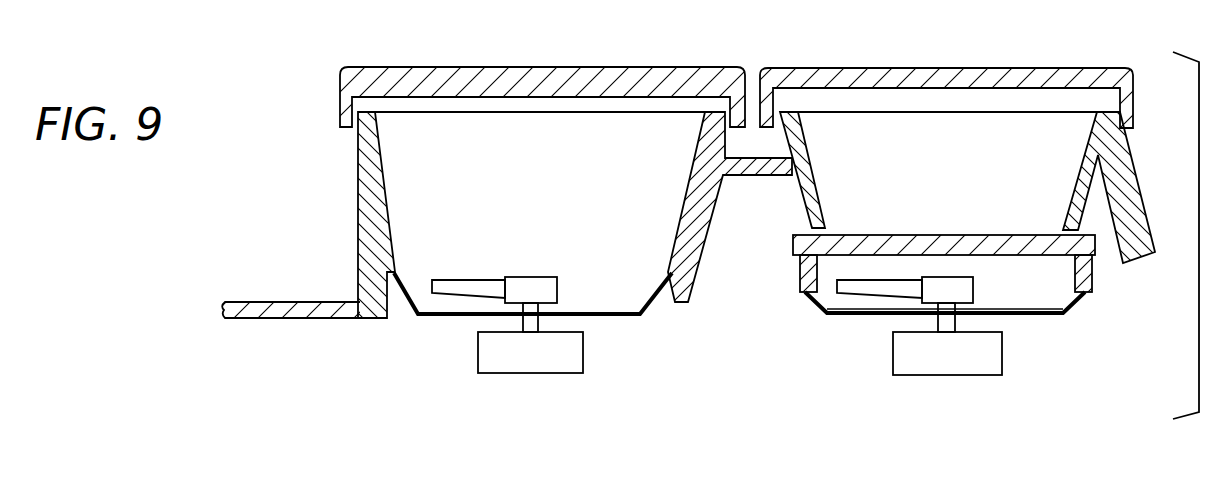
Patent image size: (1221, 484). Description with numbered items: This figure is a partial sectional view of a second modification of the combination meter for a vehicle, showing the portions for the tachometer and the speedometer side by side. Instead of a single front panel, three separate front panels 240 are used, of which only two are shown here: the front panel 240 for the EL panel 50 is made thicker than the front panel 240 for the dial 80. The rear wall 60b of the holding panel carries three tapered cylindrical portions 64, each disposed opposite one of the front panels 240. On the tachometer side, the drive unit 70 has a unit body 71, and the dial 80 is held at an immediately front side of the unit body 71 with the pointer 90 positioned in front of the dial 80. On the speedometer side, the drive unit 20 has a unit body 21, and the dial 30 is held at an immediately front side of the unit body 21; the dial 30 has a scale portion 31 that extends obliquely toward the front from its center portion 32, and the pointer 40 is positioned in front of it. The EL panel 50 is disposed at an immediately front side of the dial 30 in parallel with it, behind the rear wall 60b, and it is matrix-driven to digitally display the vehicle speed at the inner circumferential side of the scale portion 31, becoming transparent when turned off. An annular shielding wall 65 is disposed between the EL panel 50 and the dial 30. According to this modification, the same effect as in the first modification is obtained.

The front panel 240 is at (565, 67).
The tapered cylindrical portion 64 is at (358, 233).
The rear wall 60b is at (249, 300).
The dial 80 is at (412, 320).
The pointer 90 is at (534, 276).
The drive unit 70 is at (509, 367).
The unit body 71 is at (549, 368).
The EL panel 50 is at (921, 232).
The pointer 40 is at (954, 271).
The scale portion 31 is at (813, 300).
The center portion 32 is at (847, 317).
The dial 30 is at (972, 337).
The annular shielding wall 65 is at (1087, 278).
The drive unit 20 is at (986, 368).
The unit body 21 is at (963, 368).